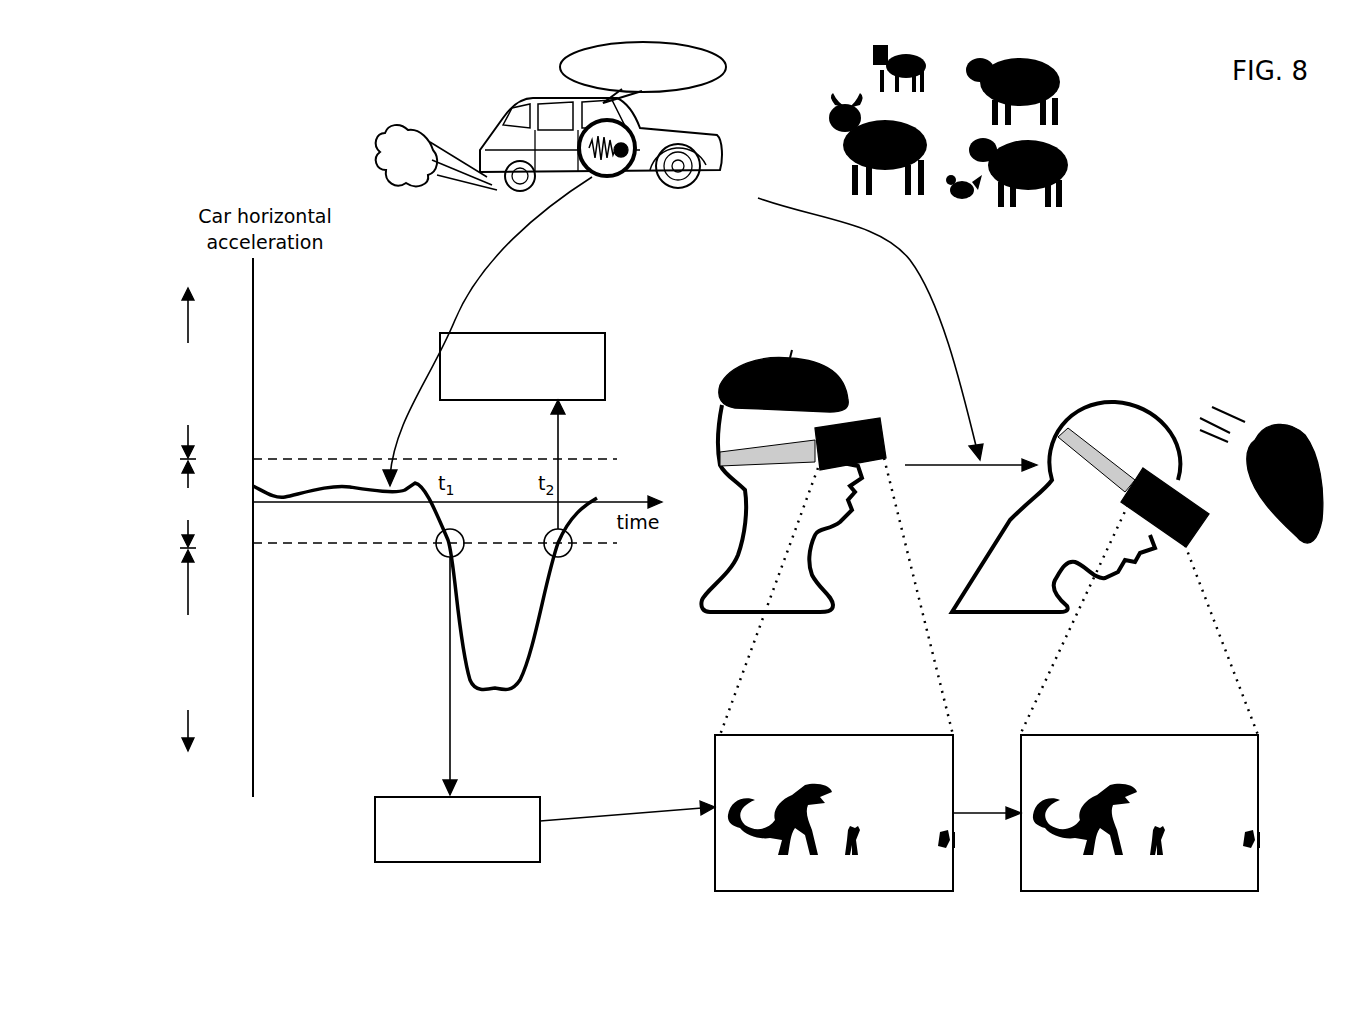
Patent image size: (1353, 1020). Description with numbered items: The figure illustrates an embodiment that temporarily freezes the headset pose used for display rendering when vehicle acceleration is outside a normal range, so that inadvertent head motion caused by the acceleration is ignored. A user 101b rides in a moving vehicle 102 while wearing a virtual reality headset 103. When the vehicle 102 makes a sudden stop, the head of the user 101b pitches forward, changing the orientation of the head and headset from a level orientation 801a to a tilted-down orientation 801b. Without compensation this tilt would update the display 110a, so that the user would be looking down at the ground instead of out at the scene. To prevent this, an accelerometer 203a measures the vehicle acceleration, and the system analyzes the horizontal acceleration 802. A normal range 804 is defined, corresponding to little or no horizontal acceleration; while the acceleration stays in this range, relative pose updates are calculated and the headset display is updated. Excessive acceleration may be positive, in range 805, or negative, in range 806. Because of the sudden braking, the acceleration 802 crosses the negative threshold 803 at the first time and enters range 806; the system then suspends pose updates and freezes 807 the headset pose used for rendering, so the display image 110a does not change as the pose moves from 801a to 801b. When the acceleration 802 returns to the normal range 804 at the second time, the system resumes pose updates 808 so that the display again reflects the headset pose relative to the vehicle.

The vehicle 102 is at (527, 100).
The accelerometer 203a is at (603, 178).
The horizontal acceleration 802 is at (357, 488).
The threshold 803 is at (391, 545).
The normal range 804 is at (178, 488).
The positive excessive acceleration range 805 is at (188, 330).
The negative excessive acceleration range 806 is at (185, 612).
The freeze of headset pose for rendering 807 is at (375, 823).
The resume pose updates 808 is at (562, 333).
The level head orientation 801a is at (790, 540).
The tilted-down head orientation 801b is at (1098, 406).
The virtual reality headset 103 is at (855, 418).
The user 101b is at (712, 568).
The display 110a is at (888, 735).